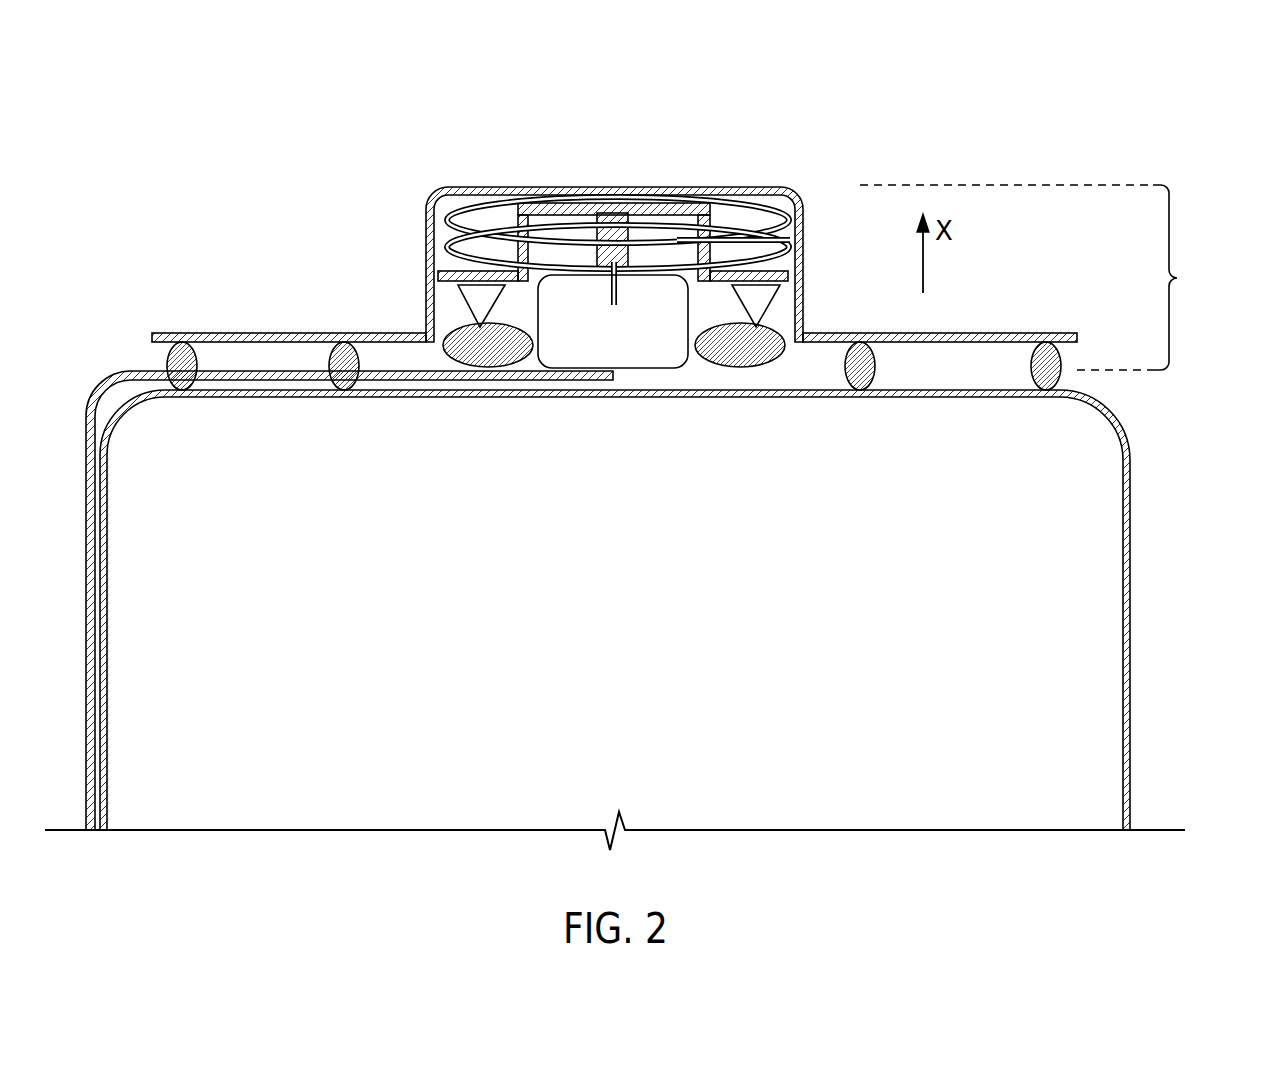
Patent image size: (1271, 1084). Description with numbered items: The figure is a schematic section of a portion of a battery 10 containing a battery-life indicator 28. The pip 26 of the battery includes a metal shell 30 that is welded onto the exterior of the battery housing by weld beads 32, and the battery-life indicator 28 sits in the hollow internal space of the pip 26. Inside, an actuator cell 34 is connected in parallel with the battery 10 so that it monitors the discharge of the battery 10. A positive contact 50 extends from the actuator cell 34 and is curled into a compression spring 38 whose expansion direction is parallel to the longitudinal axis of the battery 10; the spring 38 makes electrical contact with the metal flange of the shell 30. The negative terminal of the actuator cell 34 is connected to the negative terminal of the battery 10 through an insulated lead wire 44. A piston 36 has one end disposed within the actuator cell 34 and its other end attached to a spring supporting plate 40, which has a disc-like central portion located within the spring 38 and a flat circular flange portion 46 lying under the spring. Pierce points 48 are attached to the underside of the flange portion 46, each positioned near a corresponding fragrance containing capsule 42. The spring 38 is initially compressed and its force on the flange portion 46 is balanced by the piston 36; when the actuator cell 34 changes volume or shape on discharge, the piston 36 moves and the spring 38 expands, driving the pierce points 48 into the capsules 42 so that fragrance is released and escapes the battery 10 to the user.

The battery 10 is at (132, 148).
The pip 26 is at (800, 236).
The battery-life indicator 28 is at (1040, 277).
The metal shell 30 is at (955, 333).
The weld beads 32 is at (180, 341).
The actuator cell 34 is at (622, 352).
The piston 36 is at (603, 212).
The spring 38 is at (736, 215).
The spring supporting plate 40 is at (660, 205).
The fragrance containing capsule 42 is at (485, 357).
The insulated lead wire 44 is at (86, 545).
The flange portion 46 is at (442, 271).
The pierce points 48 is at (482, 298).
The positive contact 50 is at (614, 312).